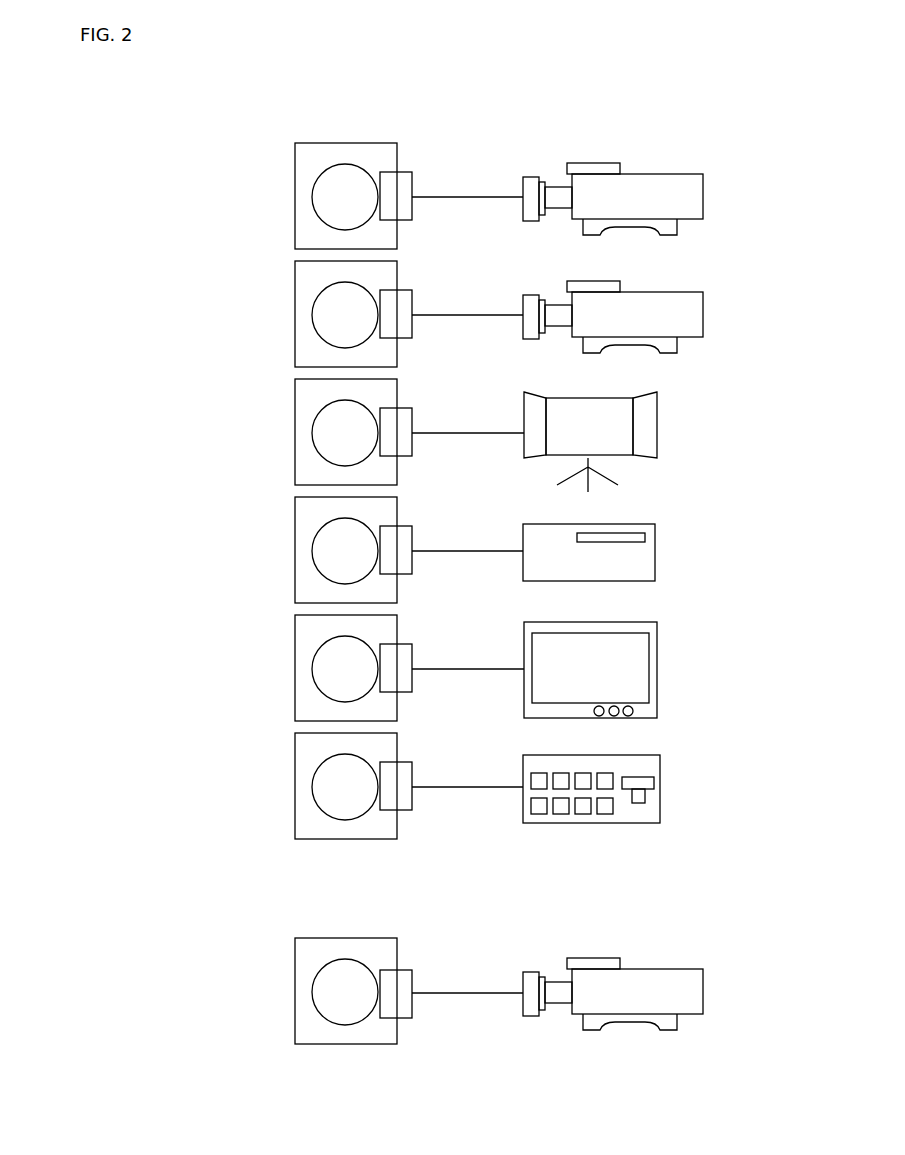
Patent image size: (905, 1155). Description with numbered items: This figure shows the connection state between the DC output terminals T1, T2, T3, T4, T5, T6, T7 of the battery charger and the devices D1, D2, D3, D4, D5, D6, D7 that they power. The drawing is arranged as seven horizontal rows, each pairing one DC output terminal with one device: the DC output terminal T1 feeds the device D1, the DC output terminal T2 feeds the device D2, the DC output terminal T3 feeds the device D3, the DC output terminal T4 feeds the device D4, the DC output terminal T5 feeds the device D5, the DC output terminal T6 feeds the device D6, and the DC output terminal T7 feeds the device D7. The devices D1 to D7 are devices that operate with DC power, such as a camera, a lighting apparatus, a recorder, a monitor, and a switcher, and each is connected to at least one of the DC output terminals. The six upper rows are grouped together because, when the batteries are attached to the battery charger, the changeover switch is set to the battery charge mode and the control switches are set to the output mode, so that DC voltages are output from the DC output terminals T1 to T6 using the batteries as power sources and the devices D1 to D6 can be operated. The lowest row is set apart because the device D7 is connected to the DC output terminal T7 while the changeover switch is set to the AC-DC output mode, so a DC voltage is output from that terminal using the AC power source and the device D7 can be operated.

The DC output terminal T1 is at (396, 159).
The DC output terminal T2 is at (396, 277).
The DC output terminal T3 is at (396, 395).
The DC output terminal T4 is at (396, 513).
The DC output terminal T5 is at (396, 631).
The DC output terminal T6 is at (396, 749).
The DC output terminal T7 is at (396, 954).
The device D1 is at (730, 203).
The device D2 is at (730, 321).
The device D3 is at (688, 426).
The device D4 is at (676, 561).
The device D5 is at (688, 674).
The device D6 is at (686, 799).
The device D7 is at (725, 1005).